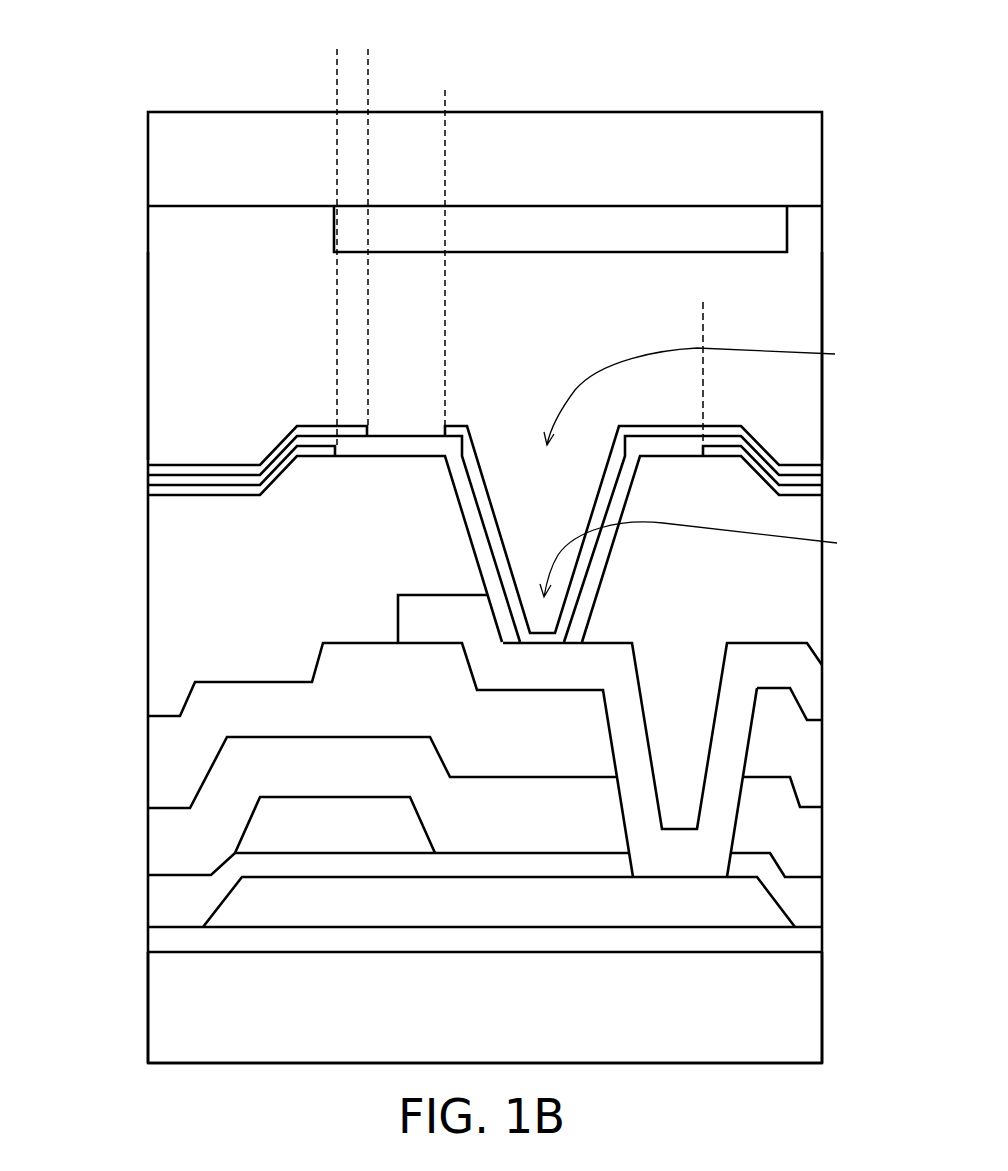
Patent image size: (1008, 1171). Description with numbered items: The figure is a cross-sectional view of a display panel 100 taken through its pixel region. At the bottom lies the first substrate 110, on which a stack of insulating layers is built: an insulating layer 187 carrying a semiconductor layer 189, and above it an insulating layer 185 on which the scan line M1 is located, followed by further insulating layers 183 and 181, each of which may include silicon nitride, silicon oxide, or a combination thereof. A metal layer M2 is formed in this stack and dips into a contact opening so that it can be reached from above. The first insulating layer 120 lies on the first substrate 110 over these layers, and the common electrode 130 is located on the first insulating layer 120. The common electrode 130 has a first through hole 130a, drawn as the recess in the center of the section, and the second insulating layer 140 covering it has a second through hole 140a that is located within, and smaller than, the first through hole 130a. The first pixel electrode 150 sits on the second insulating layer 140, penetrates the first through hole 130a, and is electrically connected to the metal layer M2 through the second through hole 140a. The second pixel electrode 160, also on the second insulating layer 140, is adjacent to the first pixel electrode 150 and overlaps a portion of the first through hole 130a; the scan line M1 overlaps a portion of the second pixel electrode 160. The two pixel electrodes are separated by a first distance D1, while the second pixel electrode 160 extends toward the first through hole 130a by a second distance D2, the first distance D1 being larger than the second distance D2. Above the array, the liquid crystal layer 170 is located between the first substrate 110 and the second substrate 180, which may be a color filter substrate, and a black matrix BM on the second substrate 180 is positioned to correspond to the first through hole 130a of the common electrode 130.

The display panel 100 is at (84, 30).
The first substrate 110 is at (805, 1010).
The first insulating layer 120 is at (172, 597).
The common electrode 130 is at (148, 490).
The first through hole 130a is at (719, 393).
The second insulating layer 140 is at (148, 485).
The second through hole 140a is at (717, 559).
The first pixel electrode 150 is at (822, 467).
The second pixel electrode 160 is at (148, 468).
The liquid crystal layer 170 is at (800, 288).
The second substrate 180 is at (805, 157).
The black matrix BM is at (769, 228).
The insulating layer 181 is at (807, 757).
The insulating layer 183 is at (800, 838).
The insulating layer 185 is at (805, 903).
The insulating layer 187 is at (805, 940).
The semiconductor layer 189 is at (243, 903).
The scan line M1 is at (258, 825).
The metal layer M2 is at (807, 688).
The first distance D1 is at (368, 97).
The second distance D2 is at (302, 51).